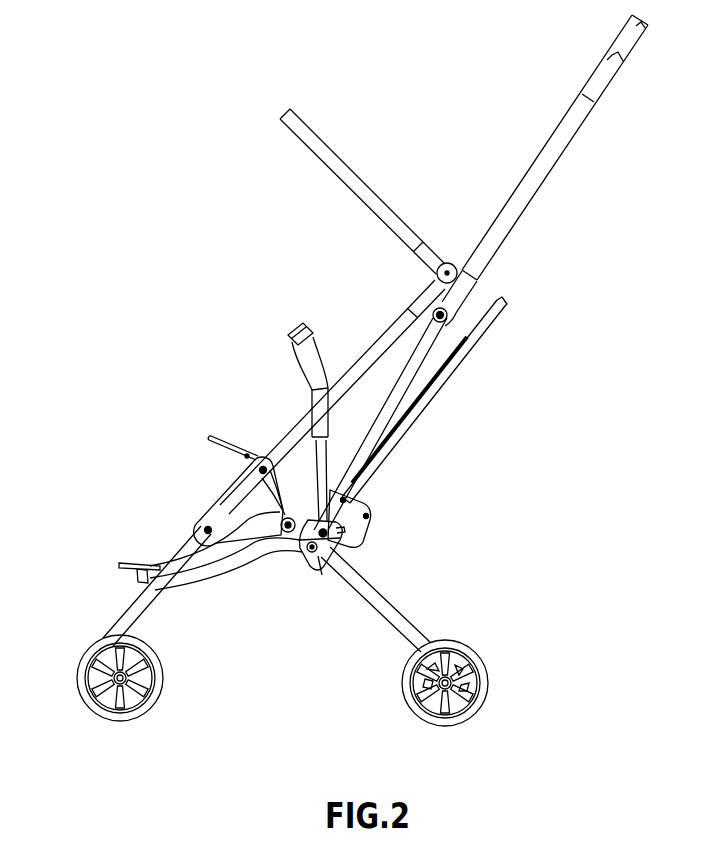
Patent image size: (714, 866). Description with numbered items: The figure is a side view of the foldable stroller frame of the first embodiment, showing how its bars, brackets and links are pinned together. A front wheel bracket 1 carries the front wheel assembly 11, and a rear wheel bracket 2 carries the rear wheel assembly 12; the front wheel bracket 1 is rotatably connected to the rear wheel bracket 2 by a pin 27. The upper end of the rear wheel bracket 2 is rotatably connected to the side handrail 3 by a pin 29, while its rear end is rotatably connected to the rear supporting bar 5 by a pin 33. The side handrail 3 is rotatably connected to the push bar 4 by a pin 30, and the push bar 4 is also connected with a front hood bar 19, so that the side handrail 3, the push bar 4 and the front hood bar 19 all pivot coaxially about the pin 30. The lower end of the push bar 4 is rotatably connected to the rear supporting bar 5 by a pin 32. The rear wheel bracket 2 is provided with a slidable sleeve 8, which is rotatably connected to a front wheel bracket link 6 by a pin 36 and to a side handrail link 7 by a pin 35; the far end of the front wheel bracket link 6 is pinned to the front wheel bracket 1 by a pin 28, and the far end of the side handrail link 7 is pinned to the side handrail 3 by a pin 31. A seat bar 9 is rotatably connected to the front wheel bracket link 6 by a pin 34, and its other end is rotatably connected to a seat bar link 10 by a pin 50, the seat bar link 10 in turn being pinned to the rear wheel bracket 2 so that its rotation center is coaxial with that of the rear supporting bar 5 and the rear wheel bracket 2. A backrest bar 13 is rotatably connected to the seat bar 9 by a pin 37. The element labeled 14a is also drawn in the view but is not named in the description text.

The front wheel bracket 1 is at (127, 612).
The rear wheel bracket 2 is at (410, 632).
The side handrail 3 is at (405, 312).
The push bar 4 is at (562, 142).
The rear supporting bar 5 is at (408, 358).
The front wheel bracket link 6 is at (213, 563).
The side handrail link 7 is at (323, 508).
The slidable sleeve 8 is at (324, 557).
The seat bar 9 is at (212, 437).
The seat bar link 10 is at (283, 508).
The front wheel assembly 11 is at (85, 672).
The rear wheel assembly 12 is at (470, 658).
The backrest bar 13 is at (508, 302).
The armrest tube 14a is at (315, 355).
The front hood bar 19 is at (385, 218).
The pin 27 is at (207, 528).
The pin 28 is at (160, 583).
The pin 29 is at (262, 466).
The pin 30 is at (447, 272).
The pin 31 is at (323, 404).
The pin 32 is at (448, 317).
The pin 33 is at (285, 531).
The pin 34 is at (368, 517).
The pin 35 is at (327, 537).
The pin 36 is at (311, 553).
The pin 37 is at (345, 500).
The pin 50 is at (245, 457).